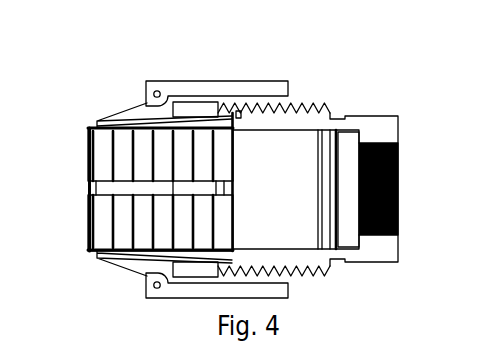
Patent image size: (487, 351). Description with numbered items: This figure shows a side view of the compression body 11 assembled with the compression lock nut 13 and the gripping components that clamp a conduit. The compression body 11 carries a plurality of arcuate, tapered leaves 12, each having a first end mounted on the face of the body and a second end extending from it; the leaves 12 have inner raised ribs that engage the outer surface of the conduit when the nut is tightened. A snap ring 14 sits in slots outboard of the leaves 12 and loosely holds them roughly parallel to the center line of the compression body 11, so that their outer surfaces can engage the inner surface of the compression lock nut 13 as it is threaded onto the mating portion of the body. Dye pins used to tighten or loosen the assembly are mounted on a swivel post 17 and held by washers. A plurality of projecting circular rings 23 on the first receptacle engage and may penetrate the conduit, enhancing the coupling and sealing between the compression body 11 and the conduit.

The compression body 11 is at (398, 130).
The leaves 12 is at (88, 157).
The compression lock nut 13 is at (124, 108).
The snap ring 14 is at (241, 115).
The swivel post 17 is at (192, 81).
The projecting circular rings 23 is at (343, 140).